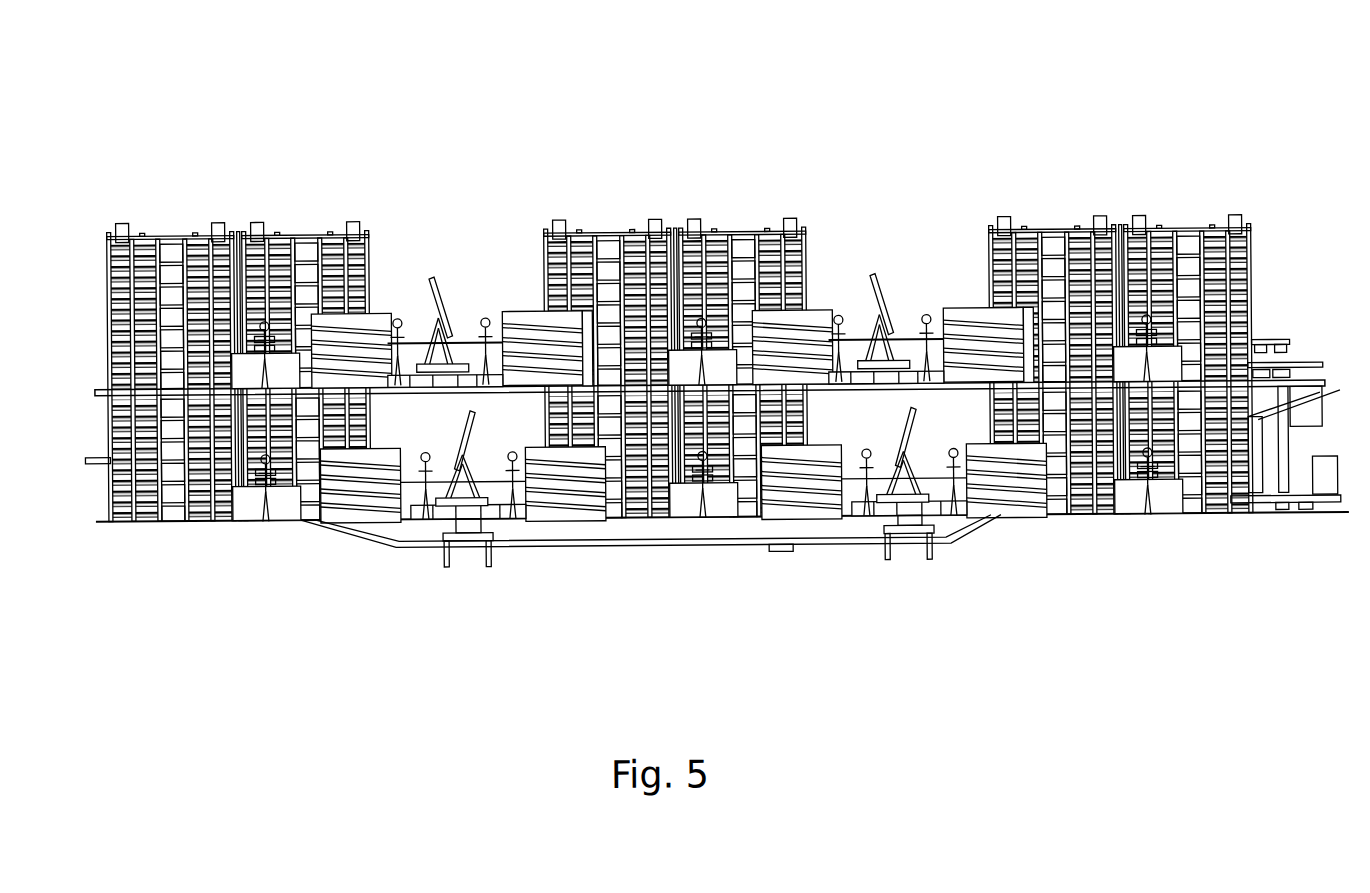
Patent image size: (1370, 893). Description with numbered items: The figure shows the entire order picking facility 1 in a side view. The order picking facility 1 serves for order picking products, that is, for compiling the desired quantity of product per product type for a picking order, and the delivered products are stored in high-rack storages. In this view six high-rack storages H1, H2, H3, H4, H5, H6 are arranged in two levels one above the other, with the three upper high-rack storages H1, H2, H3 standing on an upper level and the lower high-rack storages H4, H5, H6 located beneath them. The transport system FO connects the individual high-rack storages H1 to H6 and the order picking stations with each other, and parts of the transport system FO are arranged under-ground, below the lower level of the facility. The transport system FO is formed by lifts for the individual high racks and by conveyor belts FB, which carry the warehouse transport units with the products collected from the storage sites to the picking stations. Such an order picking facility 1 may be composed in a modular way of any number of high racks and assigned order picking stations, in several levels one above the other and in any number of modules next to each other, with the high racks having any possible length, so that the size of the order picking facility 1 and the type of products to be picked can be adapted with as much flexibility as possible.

The order picking facility 1 is at (902, 118).
The high-rack storage H1 is at (1182, 204).
The high-rack storage H2 is at (729, 200).
The high-rack storage H3 is at (290, 205).
The high-rack storage H4 is at (197, 539).
The high-rack storage H5 is at (756, 568).
The high-rack storage H6 is at (1156, 537).
The transport system FO is at (527, 552).
The conveyor belts FB is at (906, 557).